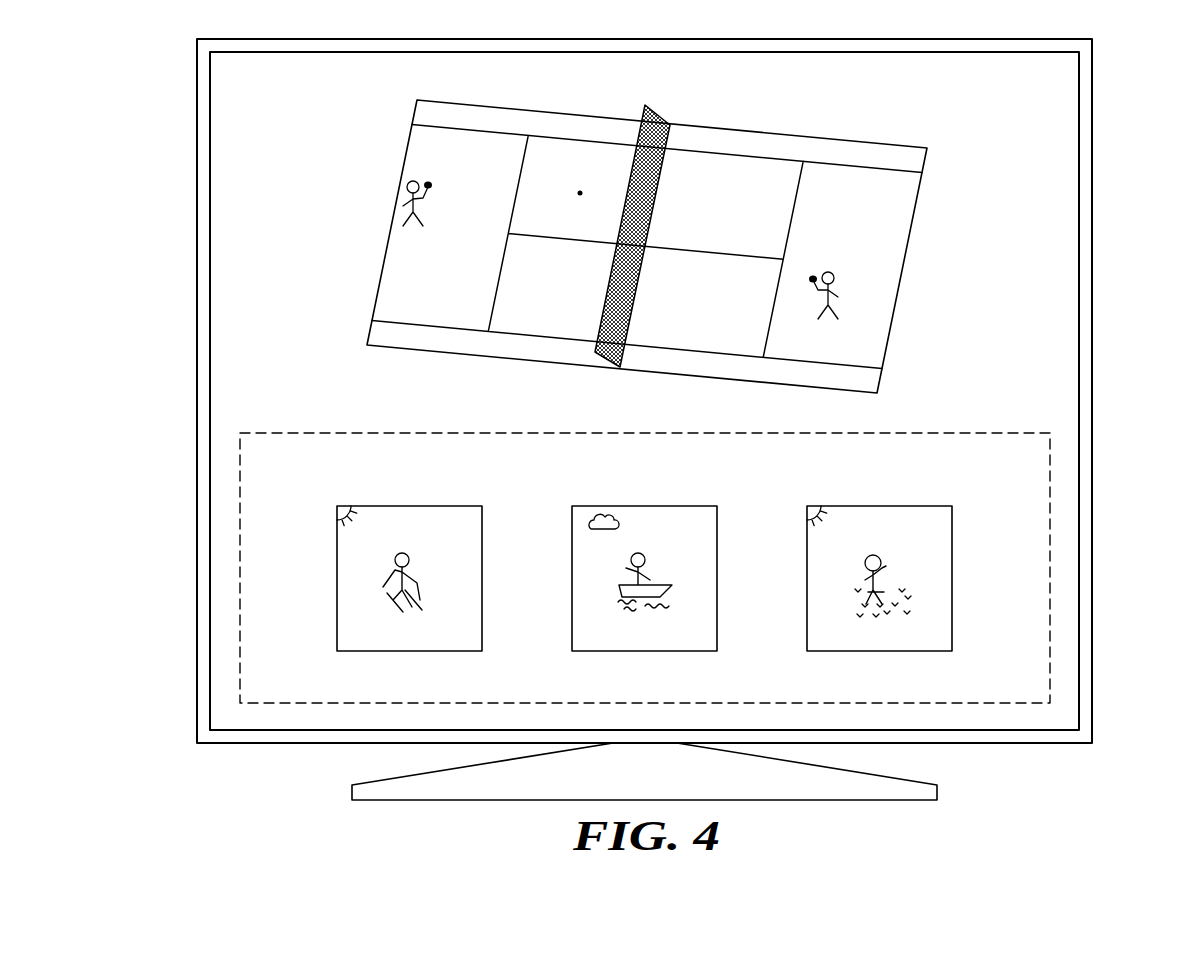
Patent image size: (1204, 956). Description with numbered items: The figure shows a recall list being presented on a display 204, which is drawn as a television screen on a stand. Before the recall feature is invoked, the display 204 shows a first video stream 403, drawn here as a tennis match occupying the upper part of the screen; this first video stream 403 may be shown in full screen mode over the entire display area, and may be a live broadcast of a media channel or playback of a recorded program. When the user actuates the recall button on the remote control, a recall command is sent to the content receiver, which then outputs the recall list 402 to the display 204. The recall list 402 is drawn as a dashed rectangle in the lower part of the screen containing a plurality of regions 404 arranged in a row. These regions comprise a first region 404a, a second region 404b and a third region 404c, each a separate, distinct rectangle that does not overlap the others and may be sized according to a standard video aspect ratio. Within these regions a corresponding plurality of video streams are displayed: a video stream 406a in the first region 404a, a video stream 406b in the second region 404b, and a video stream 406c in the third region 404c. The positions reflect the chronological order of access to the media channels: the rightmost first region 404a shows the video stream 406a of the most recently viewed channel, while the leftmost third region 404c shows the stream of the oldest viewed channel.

The display 204 is at (1092, 148).
The recall list 402 is at (240, 572).
The first video stream 403 is at (325, 150).
The plurality of regions 404 is at (301, 620).
The first region 404a is at (879, 653).
The second region 404b is at (644, 653).
The third region 404c is at (409, 653).
The video stream 406a is at (826, 562).
The video stream 406b is at (591, 562).
The video stream 406c is at (356, 562).